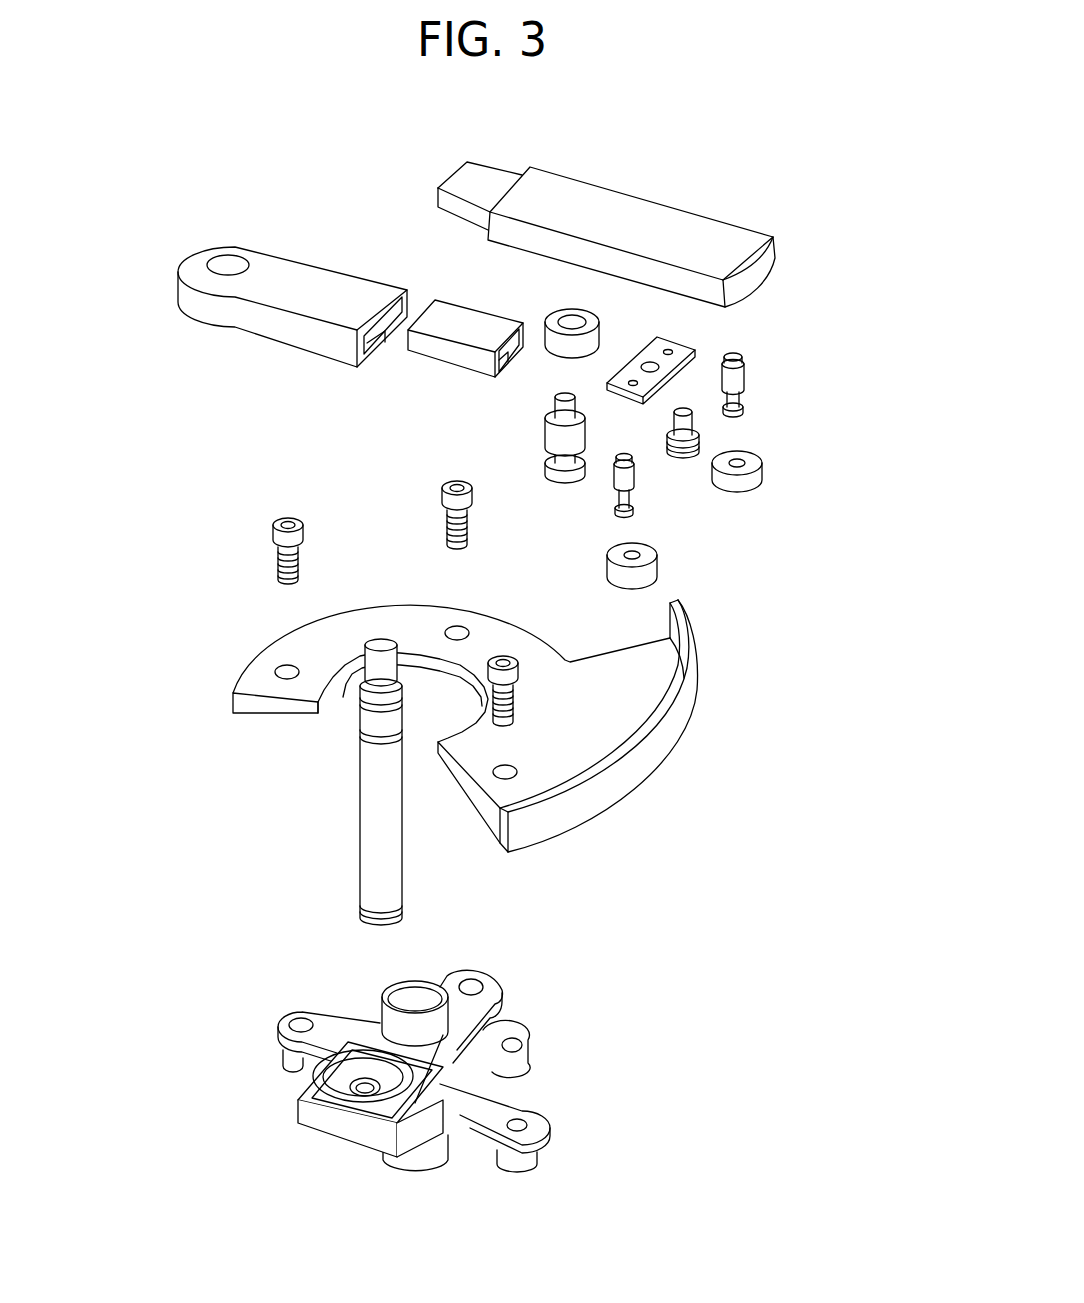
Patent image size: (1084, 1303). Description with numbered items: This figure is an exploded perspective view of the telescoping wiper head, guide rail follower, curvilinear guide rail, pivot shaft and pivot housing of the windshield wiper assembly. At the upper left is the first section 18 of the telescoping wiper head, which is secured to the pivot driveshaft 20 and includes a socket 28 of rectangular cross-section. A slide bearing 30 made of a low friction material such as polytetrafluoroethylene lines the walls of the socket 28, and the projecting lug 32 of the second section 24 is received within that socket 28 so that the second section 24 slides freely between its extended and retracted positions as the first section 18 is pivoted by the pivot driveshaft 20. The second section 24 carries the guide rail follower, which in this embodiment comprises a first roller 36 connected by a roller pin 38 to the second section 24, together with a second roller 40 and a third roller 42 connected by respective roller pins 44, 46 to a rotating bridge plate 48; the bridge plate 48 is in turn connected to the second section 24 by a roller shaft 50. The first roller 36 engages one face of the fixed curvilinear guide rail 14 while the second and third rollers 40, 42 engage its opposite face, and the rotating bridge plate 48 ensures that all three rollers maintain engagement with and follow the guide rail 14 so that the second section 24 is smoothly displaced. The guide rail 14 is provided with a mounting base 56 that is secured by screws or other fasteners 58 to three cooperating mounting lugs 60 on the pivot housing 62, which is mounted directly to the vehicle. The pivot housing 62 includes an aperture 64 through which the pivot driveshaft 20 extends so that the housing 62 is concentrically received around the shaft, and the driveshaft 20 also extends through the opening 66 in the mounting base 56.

The fixed guide rail 14 is at (660, 750).
The first section 18 is at (262, 325).
The pivot driveshaft 20 is at (372, 805).
The second section 24 is at (672, 227).
The socket 28 is at (383, 340).
The slide bearing 30 is at (448, 355).
The projecting lug 32 is at (463, 182).
The first roller 36 is at (552, 317).
The roller pin 38 is at (550, 440).
The second roller 40 is at (653, 568).
The third roller 42 is at (758, 480).
The roller pin 44 is at (633, 478).
The roller pin 46 is at (748, 378).
The rotating bridge plate 48 is at (682, 347).
The roller shaft 50 is at (690, 425).
The mounting base 56 is at (267, 640).
The fasteners 58 is at (278, 557).
The mounting lugs 60 is at (275, 1040).
The pivot housing 62 is at (424, 1036).
The aperture 64 is at (405, 995).
The opening 66 is at (345, 697).